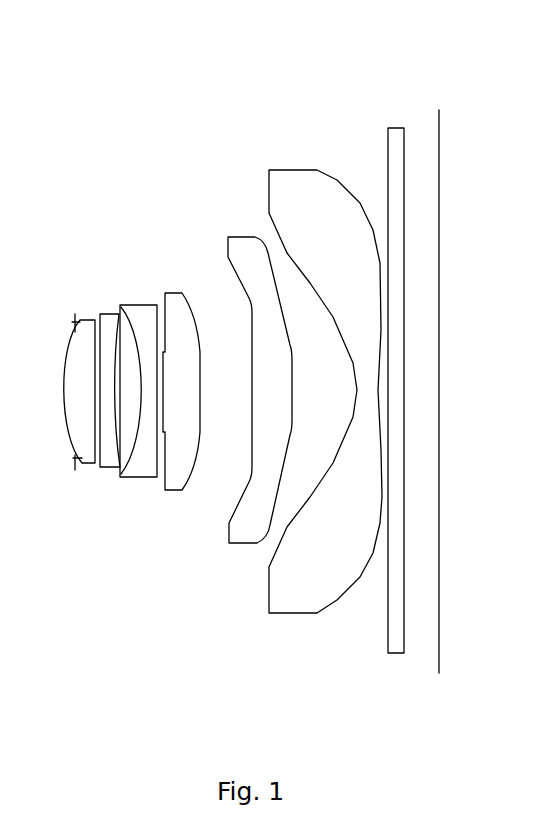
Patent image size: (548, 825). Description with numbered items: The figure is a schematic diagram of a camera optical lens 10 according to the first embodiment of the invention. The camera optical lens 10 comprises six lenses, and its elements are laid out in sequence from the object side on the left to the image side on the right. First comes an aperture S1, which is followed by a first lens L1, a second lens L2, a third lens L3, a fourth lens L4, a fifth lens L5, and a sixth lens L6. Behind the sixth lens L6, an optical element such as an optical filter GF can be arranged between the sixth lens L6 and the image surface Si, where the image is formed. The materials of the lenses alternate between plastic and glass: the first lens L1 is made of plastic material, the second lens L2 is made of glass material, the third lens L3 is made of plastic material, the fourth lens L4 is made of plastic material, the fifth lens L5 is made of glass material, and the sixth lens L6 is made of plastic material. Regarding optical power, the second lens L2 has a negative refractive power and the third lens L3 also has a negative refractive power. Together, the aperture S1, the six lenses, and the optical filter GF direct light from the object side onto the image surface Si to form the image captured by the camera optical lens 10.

The camera optical lens 10 is at (262, 33).
The aperture S1 is at (65, 389).
The first lens L1 is at (82, 378).
The second lens L2 is at (110, 373).
The third lens L3 is at (138, 374).
The fourth lens L4 is at (181, 374).
The fifth lens L5 is at (260, 375).
The sixth lens L6 is at (325, 374).
The optical filter GF is at (395, 380).
The image surface Si is at (432, 373).